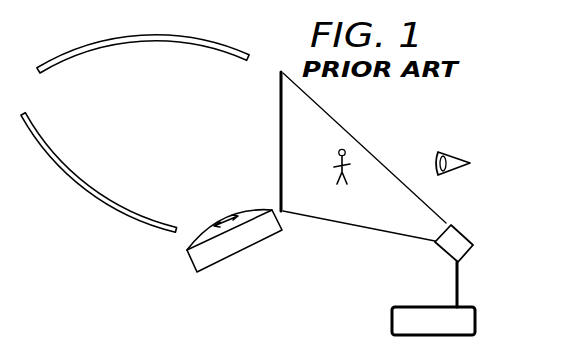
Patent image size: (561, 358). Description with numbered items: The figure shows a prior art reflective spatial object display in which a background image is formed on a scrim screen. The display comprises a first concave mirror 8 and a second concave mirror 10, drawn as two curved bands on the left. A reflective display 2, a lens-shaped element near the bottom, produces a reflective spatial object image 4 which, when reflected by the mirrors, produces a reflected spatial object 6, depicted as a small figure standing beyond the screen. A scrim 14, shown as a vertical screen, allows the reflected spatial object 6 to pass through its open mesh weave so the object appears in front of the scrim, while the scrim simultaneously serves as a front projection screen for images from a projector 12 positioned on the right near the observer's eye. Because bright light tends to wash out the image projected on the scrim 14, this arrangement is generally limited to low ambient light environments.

The reflective display 2 is at (243, 243).
The reflective spatial object image 4 is at (223, 214).
The reflected spatial object 6 is at (353, 173).
The first concave mirror 8 is at (118, 198).
The second concave mirror 10 is at (140, 43).
The projector 12 is at (460, 230).
The scrim 14 is at (279, 124).